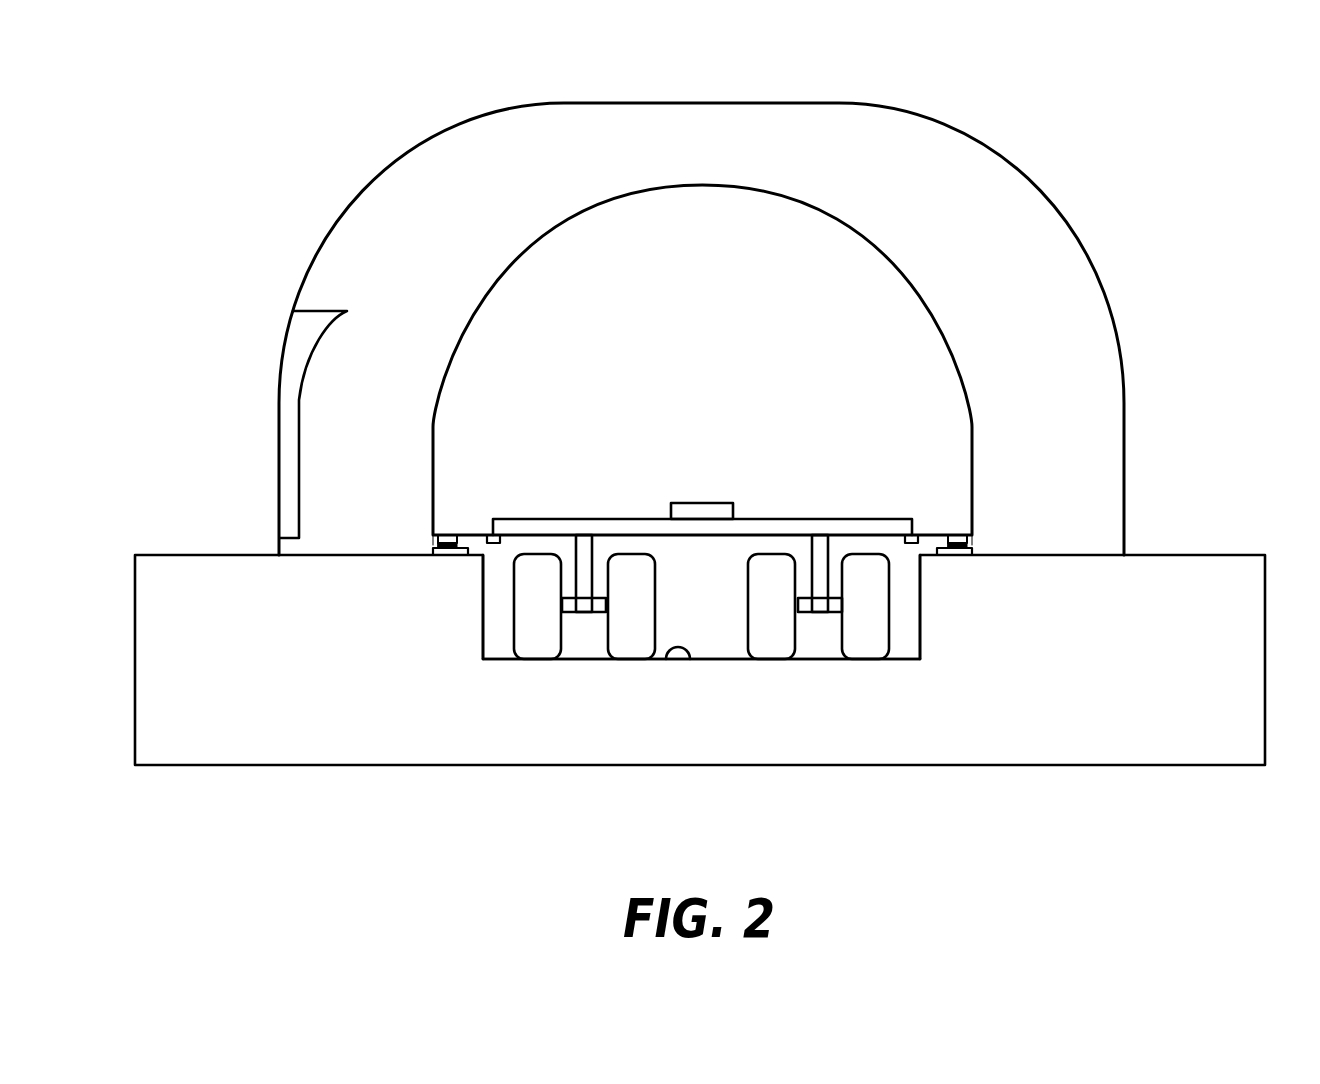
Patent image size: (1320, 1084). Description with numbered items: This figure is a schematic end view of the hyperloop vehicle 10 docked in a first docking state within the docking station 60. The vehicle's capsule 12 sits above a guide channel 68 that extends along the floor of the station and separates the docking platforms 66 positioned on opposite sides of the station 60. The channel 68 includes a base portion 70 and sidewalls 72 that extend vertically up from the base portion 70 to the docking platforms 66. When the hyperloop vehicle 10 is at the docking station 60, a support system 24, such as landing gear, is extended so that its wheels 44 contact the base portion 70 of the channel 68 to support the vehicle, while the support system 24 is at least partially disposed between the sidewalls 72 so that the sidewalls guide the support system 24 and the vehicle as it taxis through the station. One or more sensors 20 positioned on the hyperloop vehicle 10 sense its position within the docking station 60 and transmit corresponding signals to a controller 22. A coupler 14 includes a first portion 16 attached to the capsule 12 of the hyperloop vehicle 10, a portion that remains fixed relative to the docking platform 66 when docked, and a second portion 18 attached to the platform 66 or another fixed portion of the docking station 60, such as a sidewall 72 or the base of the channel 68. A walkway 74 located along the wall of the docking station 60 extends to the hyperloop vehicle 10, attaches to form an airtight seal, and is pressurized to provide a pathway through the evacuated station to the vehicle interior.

The hyperloop vehicle 10 is at (836, 180).
The docking station 60 is at (1013, 167).
The capsule 12 is at (900, 272).
The controller 22 is at (708, 503).
The sensors 20 is at (492, 537).
The first portion 16 is at (448, 535).
The coupler 14 is at (418, 524).
The second portion 18 is at (433, 551).
The docking platforms 66 is at (338, 555).
The walkway 74 is at (311, 311).
The sidewalls 72 is at (484, 603).
The wheels 44 is at (541, 650).
The support system 24 is at (585, 640).
The base portion 70 is at (688, 662).
The guide channel 68 is at (702, 626).